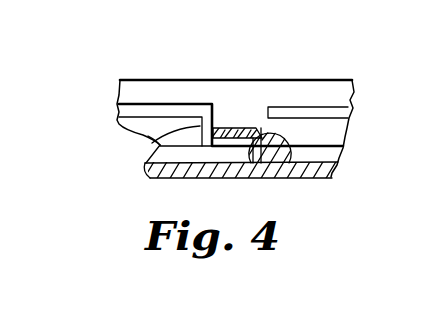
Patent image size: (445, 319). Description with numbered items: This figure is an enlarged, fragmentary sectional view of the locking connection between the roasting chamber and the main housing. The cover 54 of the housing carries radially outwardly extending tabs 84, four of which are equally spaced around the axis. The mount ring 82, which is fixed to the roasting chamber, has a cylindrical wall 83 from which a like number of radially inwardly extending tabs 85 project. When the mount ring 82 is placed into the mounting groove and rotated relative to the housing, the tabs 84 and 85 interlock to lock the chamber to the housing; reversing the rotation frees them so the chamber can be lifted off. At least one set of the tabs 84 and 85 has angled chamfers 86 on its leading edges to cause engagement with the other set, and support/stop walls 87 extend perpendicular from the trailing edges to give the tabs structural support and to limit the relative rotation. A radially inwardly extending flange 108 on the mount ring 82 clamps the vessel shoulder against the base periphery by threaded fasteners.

The cover 54 is at (330, 172).
The mount ring 82 is at (163, 80).
The cylindrical wall 83 is at (217, 98).
The radially outwardly extending tabs 84 is at (241, 128).
The radially inwardly extending tabs 85 is at (213, 147).
The angled chamfers 86 is at (262, 174).
The support/stop walls 87 is at (160, 139).
The radially inwardly extending flange 108 is at (121, 110).